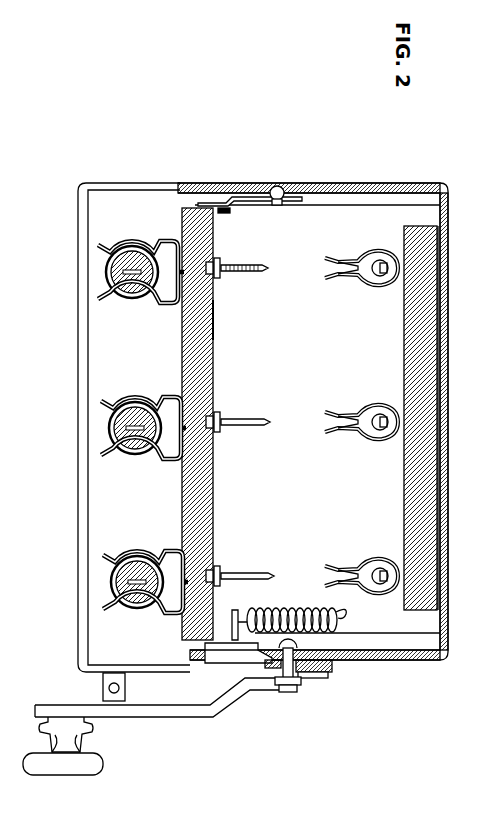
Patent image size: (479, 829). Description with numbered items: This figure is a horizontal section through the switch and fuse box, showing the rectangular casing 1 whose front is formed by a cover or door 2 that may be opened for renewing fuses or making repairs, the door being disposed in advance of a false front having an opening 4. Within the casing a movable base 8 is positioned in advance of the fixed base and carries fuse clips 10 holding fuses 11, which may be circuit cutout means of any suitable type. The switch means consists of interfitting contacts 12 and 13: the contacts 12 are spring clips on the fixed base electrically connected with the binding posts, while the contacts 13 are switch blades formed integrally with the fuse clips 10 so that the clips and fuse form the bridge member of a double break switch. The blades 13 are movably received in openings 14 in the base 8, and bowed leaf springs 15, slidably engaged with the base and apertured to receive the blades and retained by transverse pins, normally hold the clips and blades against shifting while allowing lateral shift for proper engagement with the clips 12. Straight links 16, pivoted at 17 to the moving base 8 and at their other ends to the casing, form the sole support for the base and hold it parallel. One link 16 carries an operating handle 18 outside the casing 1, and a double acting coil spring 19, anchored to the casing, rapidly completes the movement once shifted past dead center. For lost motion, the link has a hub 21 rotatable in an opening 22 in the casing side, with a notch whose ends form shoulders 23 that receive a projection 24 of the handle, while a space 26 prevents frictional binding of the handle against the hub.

The casing 1 is at (449, 550).
The cover or door 2 is at (80, 384).
The opening 4 is at (430, 290).
The movable base 8 is at (183, 362).
The fuse clips 10 is at (122, 250).
The fuses 11 is at (215, 198).
The contacts 12 is at (349, 407).
The contacts 13 is at (270, 273).
The openings 14 is at (214, 320).
The springs 15 is at (223, 278).
The links 16 is at (287, 190).
The pivot 17 is at (247, 678).
The operating handle 18 is at (150, 717).
The double acting coil spring 19 is at (301, 599).
The hub 21 is at (322, 678).
The opening 22 is at (334, 662).
The shoulders 23 is at (290, 690).
The projection 24 is at (278, 668).
The space 26 is at (300, 692).